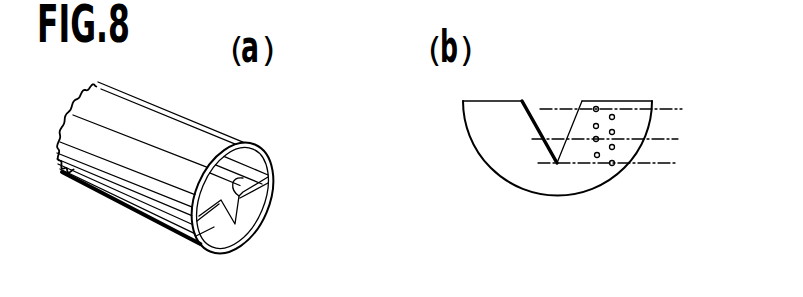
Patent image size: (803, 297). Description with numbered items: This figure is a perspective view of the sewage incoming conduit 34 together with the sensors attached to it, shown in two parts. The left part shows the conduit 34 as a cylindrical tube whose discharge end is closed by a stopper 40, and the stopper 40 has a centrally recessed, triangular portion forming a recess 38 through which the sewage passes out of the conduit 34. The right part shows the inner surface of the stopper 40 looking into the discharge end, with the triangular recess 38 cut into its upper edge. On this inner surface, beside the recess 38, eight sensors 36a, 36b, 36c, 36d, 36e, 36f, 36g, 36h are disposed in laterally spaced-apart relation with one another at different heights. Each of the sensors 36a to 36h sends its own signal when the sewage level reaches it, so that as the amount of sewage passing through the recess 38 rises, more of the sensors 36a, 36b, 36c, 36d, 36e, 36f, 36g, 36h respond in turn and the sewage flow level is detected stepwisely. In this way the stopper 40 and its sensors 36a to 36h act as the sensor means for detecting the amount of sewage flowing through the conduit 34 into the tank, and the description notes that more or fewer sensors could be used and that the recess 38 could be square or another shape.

The sewage incoming conduit 34 is at (172, 112).
The triangular recess 38 is at (269, 164).
The stopper 40 is at (210, 233).
The sensor 36a is at (615, 165).
The sensor 36b is at (599, 158).
The sensor 36c is at (615, 147).
The sensor 36d is at (595, 142).
The sensor 36e is at (615, 132).
The sensor 36f is at (595, 124).
The sensor 36g is at (615, 117).
The sensor 36h is at (599, 107).